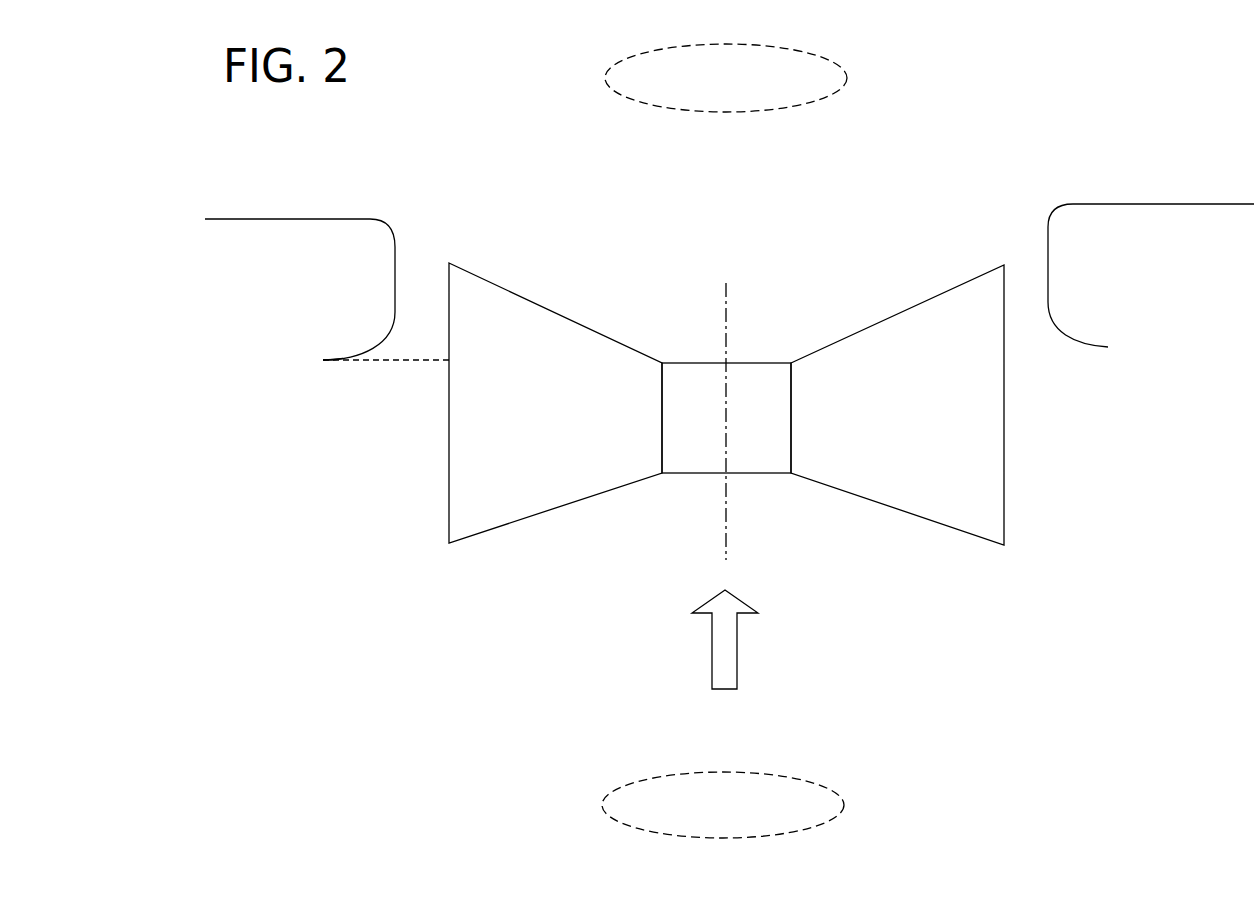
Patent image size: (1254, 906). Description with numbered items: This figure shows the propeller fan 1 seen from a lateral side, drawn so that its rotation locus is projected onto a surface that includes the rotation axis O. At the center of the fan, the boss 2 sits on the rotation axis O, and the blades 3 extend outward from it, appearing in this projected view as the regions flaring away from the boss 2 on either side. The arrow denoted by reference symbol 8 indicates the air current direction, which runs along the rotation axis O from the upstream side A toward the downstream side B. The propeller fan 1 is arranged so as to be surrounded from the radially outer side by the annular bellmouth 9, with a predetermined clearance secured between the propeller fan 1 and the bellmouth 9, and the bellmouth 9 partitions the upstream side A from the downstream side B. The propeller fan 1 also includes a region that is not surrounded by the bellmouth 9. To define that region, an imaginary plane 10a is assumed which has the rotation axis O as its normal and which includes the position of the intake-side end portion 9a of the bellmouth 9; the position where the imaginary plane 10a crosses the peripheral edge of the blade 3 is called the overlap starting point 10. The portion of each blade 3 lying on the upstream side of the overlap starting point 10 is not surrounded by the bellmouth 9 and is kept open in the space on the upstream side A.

The propeller fan 1 is at (504, 231).
The boss 2 is at (685, 363).
The blade 3 is at (897, 313).
The arrow indicating air current direction 8 is at (712, 647).
The bellmouth 9 is at (320, 219).
The intake-side end portion 9a is at (323, 362).
The overlap starting point 10 is at (447, 365).
The imaginary plane 10a is at (375, 363).
The rotation axis O is at (726, 533).
The upstream side A is at (723, 805).
The downstream side B is at (726, 78).